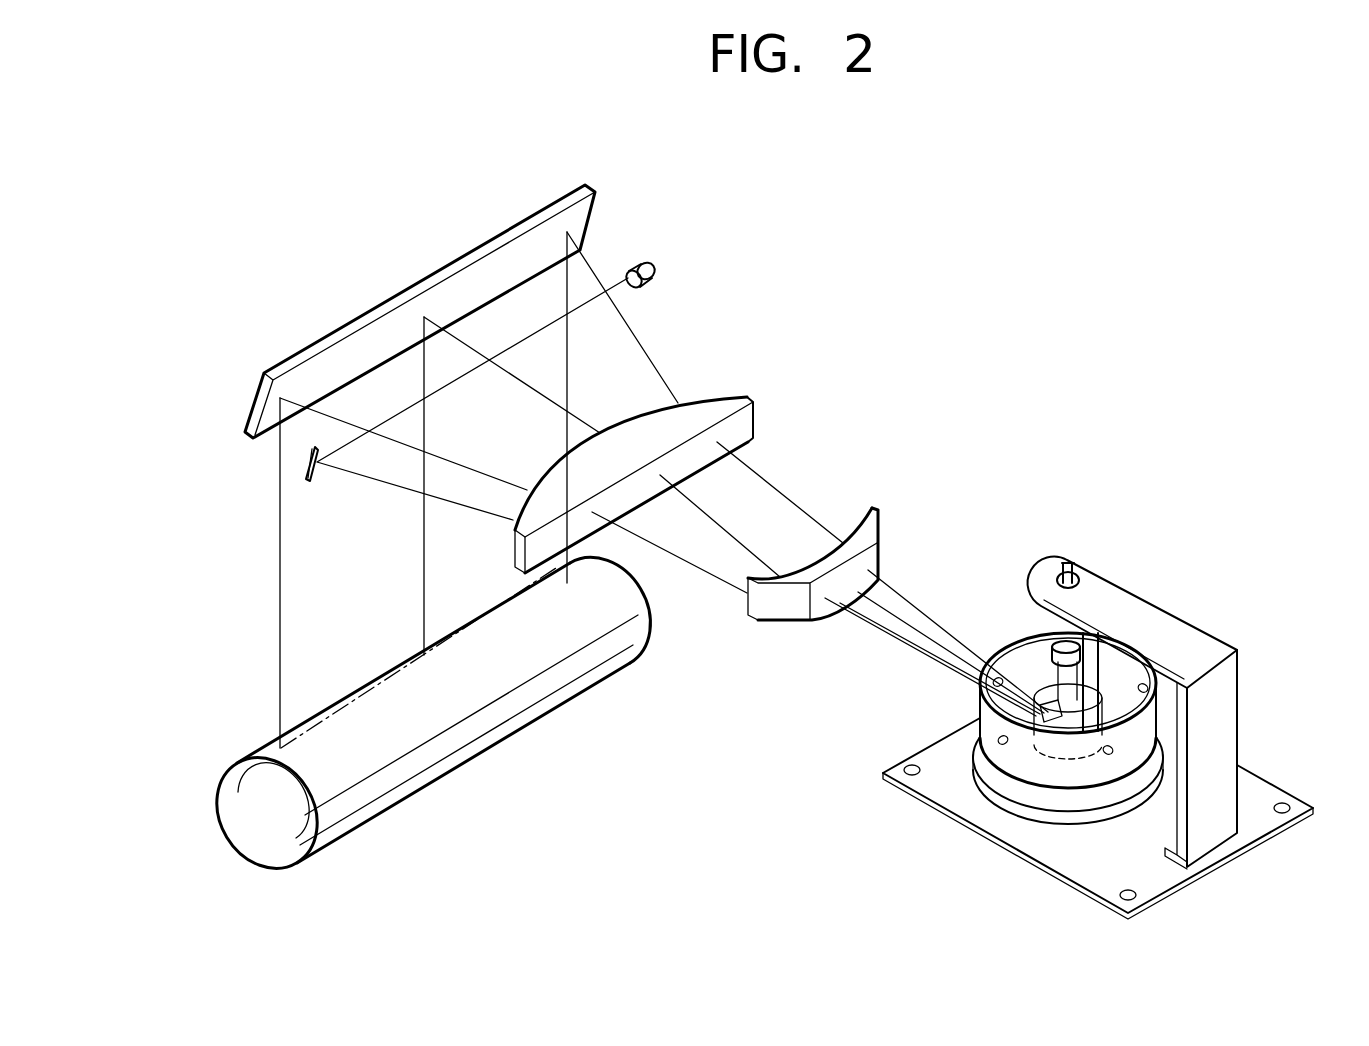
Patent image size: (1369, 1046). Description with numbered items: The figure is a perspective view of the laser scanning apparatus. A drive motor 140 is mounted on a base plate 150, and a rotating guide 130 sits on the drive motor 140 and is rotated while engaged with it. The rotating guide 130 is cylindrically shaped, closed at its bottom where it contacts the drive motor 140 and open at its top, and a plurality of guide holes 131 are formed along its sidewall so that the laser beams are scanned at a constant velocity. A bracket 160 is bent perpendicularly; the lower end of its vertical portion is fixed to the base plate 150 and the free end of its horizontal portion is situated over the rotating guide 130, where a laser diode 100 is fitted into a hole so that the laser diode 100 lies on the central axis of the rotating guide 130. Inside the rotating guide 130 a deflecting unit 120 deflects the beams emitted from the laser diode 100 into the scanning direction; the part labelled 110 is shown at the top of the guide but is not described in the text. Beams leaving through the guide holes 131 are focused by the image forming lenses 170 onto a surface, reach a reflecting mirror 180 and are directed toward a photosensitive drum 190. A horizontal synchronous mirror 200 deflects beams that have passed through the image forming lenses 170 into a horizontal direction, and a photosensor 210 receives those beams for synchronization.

The laser diode 100 is at (1058, 578).
The bearing cap 110 is at (1060, 647).
The deflecting unit 120 is at (1053, 722).
The rotating guide 130 is at (990, 732).
The guide holes 131 is at (980, 699).
The drive motor 140 is at (1010, 785).
The base plate 150 is at (1158, 880).
The bracket 160 is at (1227, 716).
The image forming lenses 170 is at (783, 407).
The reflecting mirror 180 is at (433, 277).
The photosensitive drum 190 is at (378, 793).
The horizontal synchronous mirror 200 is at (305, 470).
The photosensor 210 is at (647, 287).